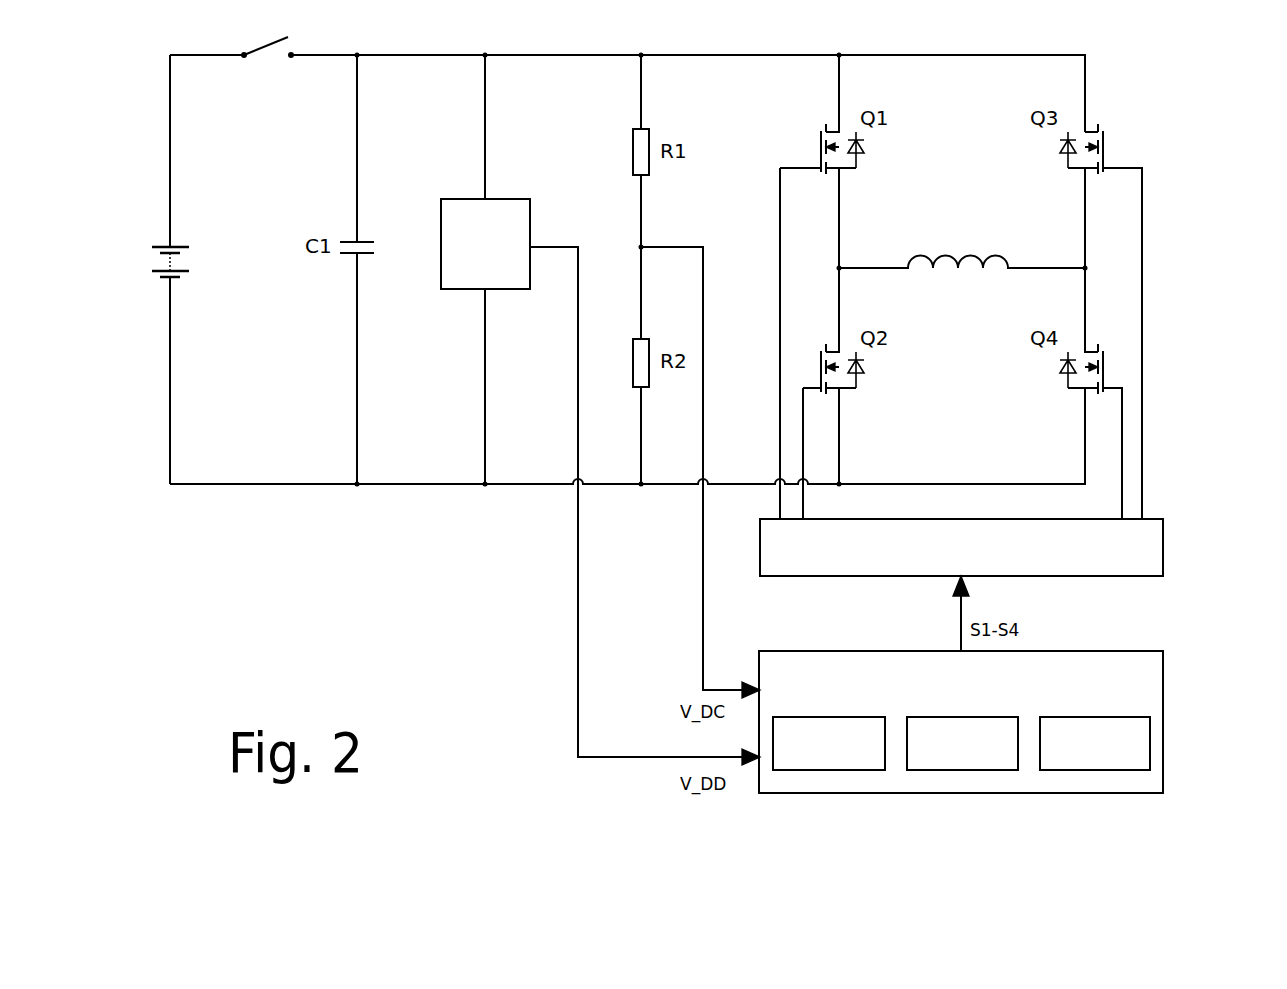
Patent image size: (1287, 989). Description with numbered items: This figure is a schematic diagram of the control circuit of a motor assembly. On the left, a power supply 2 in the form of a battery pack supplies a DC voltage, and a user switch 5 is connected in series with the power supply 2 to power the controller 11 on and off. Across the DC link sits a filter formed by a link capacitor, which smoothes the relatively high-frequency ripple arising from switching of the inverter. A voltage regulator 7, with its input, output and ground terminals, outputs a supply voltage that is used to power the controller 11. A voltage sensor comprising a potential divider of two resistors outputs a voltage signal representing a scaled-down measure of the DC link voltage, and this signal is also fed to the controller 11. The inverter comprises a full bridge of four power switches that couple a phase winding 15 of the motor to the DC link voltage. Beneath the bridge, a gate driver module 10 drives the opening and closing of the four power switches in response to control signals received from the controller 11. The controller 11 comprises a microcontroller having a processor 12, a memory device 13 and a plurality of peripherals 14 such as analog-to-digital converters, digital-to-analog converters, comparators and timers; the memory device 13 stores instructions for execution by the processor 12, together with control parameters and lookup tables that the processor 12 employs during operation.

The power supply 2 is at (150, 258).
The user switch 5 is at (272, 60).
The voltage regulator 7 is at (462, 289).
The gate driver module 10 is at (1163, 549).
The controller 11 is at (1163, 722).
The processor 12 is at (830, 770).
The memory device 13 is at (963, 770).
The peripherals 14 is at (1095, 770).
The phase winding 15 is at (970, 254).